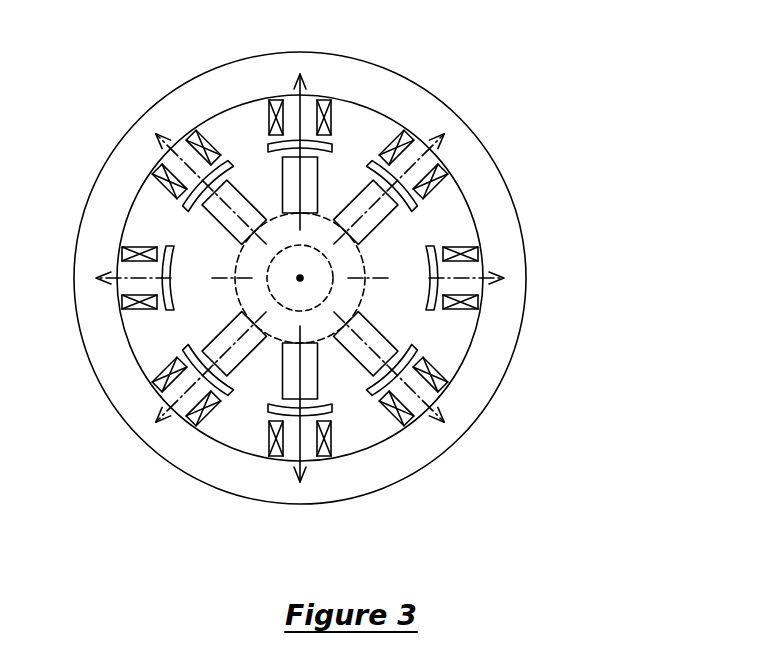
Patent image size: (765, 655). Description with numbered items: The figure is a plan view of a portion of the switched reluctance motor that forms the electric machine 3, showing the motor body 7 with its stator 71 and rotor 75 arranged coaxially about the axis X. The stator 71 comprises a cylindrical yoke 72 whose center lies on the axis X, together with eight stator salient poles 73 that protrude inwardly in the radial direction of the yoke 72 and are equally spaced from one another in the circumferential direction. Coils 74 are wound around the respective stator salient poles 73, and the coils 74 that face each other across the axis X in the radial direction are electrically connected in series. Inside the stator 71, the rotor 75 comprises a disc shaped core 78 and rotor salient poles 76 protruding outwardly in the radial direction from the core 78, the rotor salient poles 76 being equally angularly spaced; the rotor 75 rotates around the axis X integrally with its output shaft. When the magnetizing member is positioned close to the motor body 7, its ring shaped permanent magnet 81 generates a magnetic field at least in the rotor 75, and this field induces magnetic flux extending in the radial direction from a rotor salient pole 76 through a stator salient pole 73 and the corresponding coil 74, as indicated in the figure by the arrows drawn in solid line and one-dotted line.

The electric machine 3 is at (528, 67).
The motor body 7 is at (357, 278).
The stator 71 is at (527, 304).
The yoke 72 is at (446, 443).
The stator salient pole 73 is at (268, 146).
The coil 74 is at (395, 155).
The rotor 75 is at (434, 312).
The rotor salient pole 76 is at (283, 192).
The core 78 is at (327, 222).
The permanent magnet 81 is at (280, 312).
The axis X is at (300, 281).